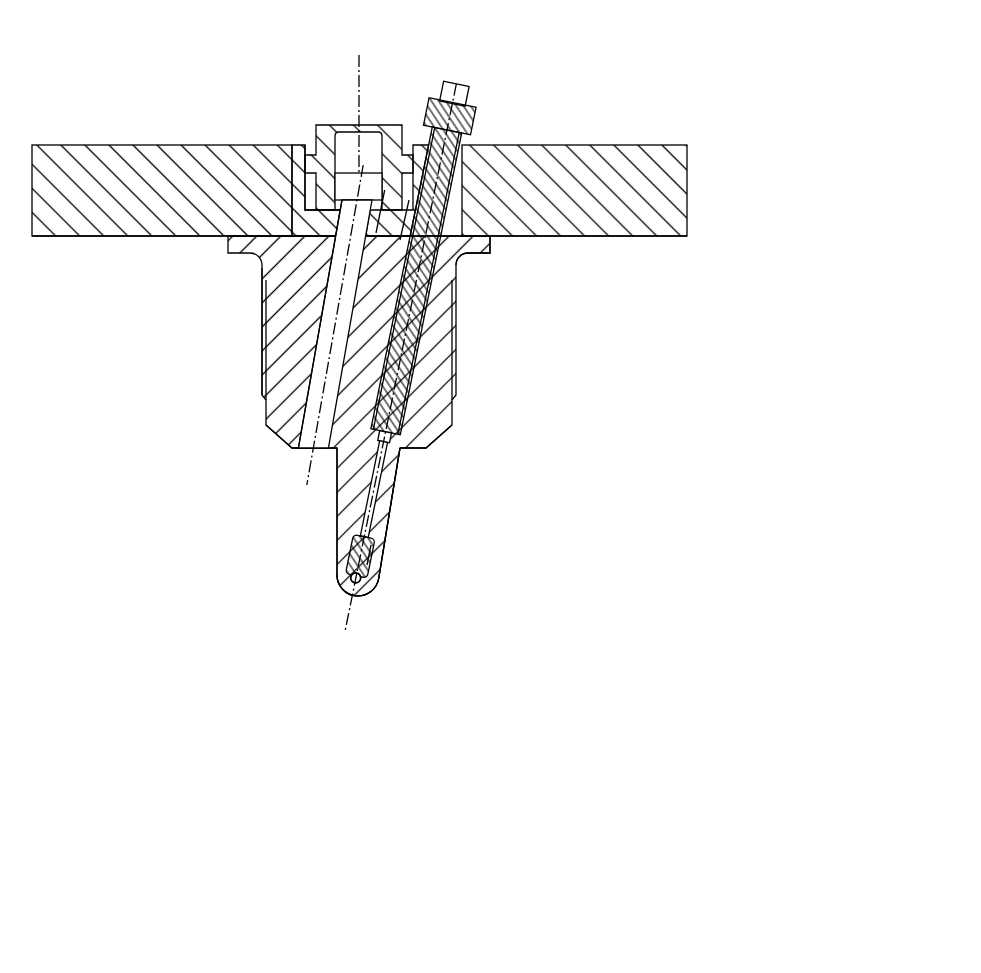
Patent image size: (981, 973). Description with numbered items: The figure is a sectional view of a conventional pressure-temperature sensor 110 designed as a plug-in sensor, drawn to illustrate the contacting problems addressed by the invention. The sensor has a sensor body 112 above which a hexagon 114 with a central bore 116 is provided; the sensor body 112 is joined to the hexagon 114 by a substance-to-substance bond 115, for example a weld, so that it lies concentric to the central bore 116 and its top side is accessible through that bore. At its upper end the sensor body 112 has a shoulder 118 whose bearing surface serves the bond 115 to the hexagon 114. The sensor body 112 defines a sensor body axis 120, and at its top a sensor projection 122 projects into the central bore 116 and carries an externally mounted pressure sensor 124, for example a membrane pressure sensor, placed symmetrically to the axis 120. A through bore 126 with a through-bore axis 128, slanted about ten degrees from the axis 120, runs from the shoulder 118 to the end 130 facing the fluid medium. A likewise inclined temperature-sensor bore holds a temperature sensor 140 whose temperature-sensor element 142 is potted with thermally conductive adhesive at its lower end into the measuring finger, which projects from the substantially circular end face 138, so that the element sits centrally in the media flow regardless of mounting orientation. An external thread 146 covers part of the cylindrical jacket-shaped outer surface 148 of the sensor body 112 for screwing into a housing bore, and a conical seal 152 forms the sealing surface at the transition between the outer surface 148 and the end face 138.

The sensor 110 is at (588, 123).
The sensor body 112 is at (440, 437).
The hexagon 114 is at (650, 218).
The substance-to-substance bond 115 is at (390, 212).
The central bore 116 is at (300, 165).
The shoulder 118 is at (463, 248).
The sensor body axis 120 is at (362, 92).
The sensor projection 122 is at (306, 218).
The pressure sensor 124 is at (332, 125).
The through bore 126 is at (332, 318).
The through-bore axis 128 is at (328, 358).
The end 130 is at (318, 512).
The end face 138 is at (410, 453).
The temperature sensor 140 is at (428, 440).
The temperature-sensor element 142 is at (380, 573).
The external thread 146 is at (262, 388).
The cylindrical jacket-shaped outer surface 148 is at (150, 348).
The conical seal 152 is at (277, 440).